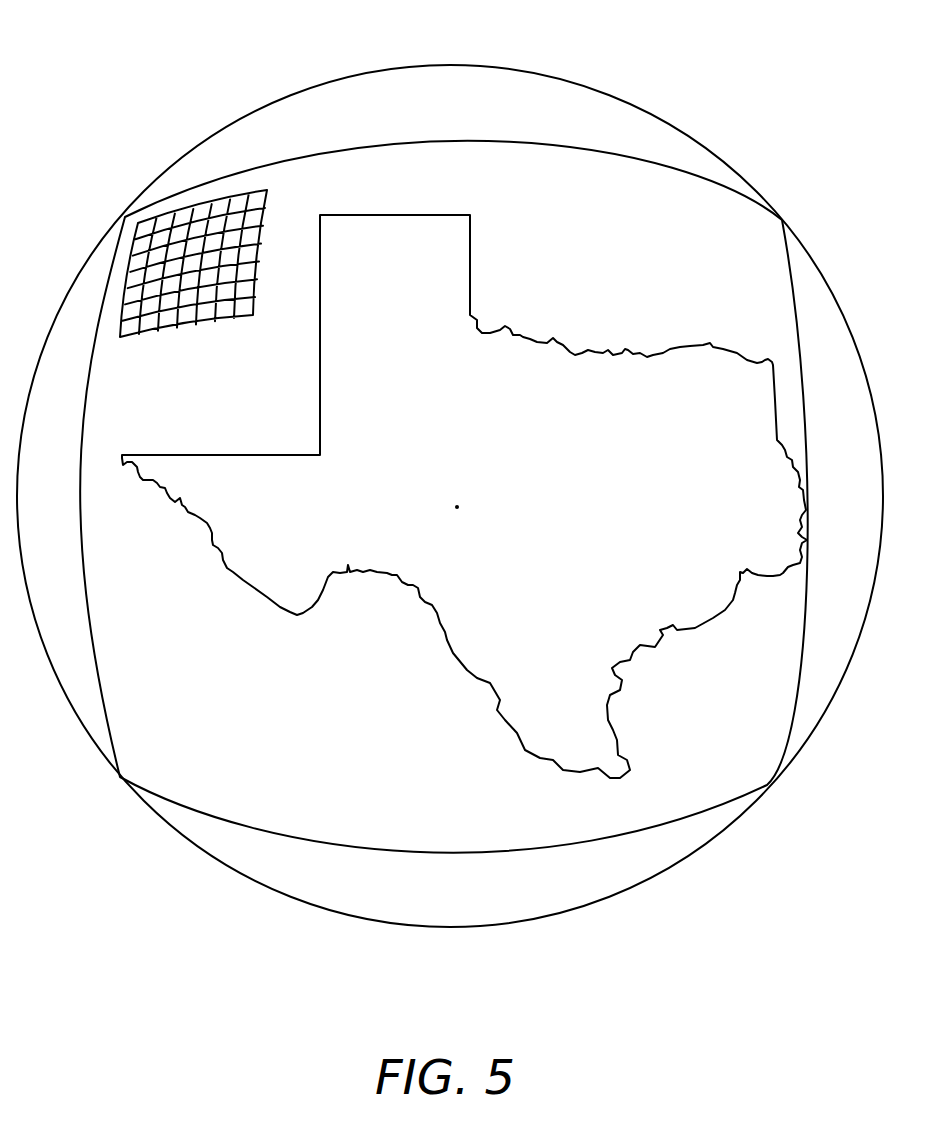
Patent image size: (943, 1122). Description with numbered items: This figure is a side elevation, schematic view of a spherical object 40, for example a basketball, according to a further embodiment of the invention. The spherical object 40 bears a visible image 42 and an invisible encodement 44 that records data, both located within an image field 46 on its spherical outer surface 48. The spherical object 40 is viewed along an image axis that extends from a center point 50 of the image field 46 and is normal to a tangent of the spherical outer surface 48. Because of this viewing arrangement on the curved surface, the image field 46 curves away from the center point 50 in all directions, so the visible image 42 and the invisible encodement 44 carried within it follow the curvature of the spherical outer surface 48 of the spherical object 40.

The spherical object 40 is at (735, 48).
The visible image 42 is at (620, 397).
The invisible encodement 44 is at (167, 258).
The image field 46 is at (288, 835).
The spherical outer surface 48 is at (460, 900).
The center point 50 is at (458, 507).